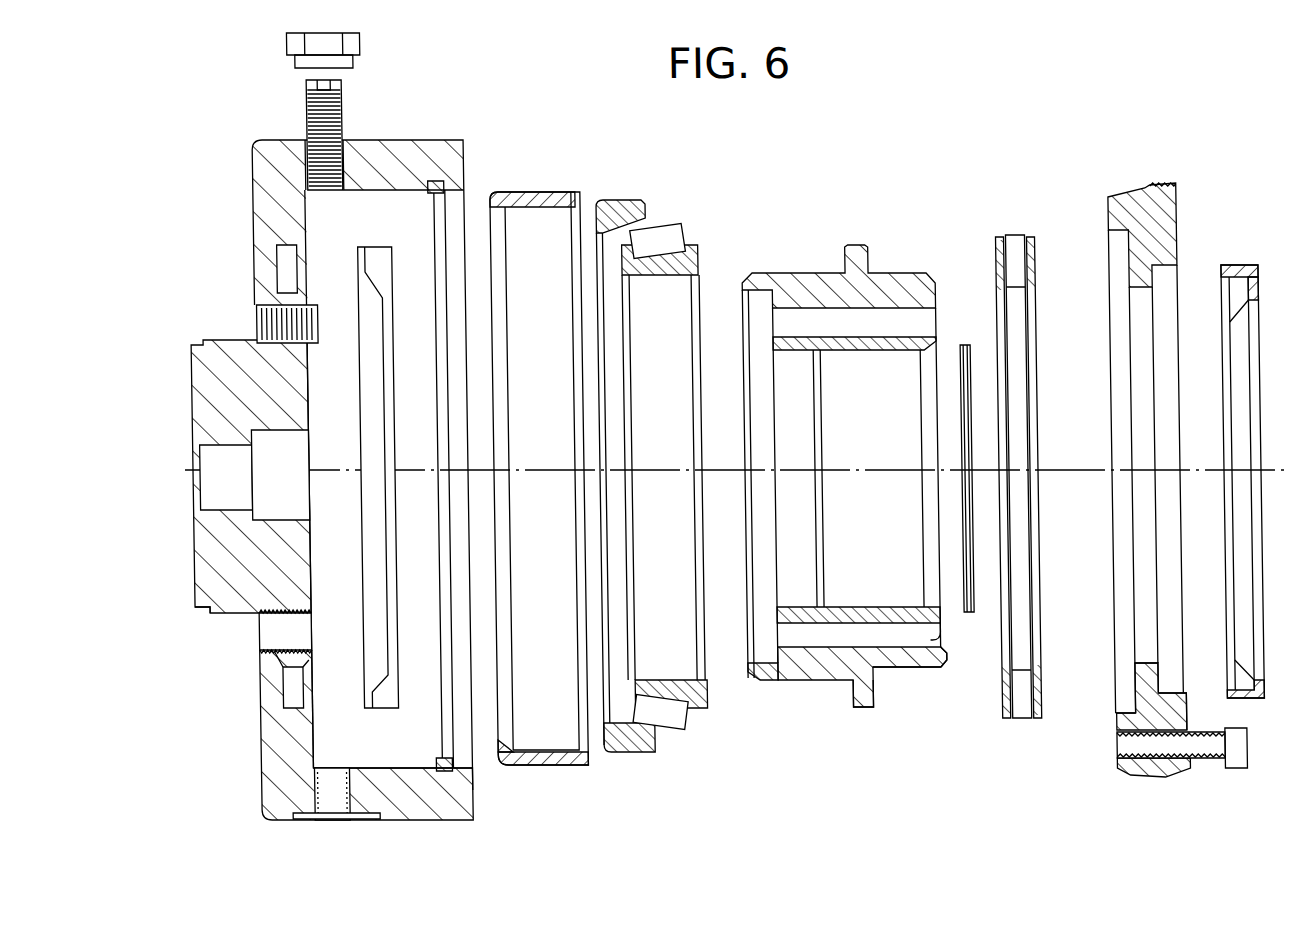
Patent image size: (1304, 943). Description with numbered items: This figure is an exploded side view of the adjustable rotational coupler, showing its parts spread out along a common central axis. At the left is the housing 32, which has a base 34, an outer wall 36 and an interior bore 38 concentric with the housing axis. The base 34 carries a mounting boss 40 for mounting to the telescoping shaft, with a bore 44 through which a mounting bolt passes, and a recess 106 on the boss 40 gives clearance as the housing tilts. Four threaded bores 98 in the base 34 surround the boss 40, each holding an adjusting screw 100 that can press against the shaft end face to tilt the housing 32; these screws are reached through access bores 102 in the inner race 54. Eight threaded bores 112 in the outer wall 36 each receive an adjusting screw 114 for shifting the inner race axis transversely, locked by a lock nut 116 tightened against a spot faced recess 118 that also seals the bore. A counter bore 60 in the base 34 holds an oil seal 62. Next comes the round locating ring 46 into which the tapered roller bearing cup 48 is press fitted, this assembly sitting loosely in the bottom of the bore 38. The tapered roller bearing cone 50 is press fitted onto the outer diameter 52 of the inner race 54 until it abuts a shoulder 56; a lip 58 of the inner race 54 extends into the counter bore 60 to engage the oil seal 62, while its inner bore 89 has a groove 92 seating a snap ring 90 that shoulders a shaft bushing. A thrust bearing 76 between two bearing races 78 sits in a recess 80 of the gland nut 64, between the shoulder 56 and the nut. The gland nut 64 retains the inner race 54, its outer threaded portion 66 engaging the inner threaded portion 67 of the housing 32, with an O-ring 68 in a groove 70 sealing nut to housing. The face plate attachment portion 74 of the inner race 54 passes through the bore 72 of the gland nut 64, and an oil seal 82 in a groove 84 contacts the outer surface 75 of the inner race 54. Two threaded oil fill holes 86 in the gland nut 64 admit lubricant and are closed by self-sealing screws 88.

The housing 32 is at (267, 787).
The base 34 is at (257, 722).
The outer wall 36 is at (422, 797).
The interior bore 38 is at (368, 767).
The mounting boss 40 is at (210, 588).
The bore 44 is at (213, 507).
The locating ring 46 is at (539, 198).
The tapered roller bearing cup 48 is at (619, 202).
The tapered roller bearing cone 50 is at (666, 228).
The outer diameter 52 is at (805, 680).
The inner race 54 is at (796, 285).
The shoulder 56 is at (861, 707).
The lip 58 is at (762, 675).
The counter bore 60 is at (296, 692).
The oil seal 62 is at (372, 600).
The gland nut 64 is at (1144, 192).
The outer threaded portion 66 is at (1163, 185).
The inner threaded portion 67 is at (450, 768).
The O-ring 68 is at (441, 185).
The groove 70 is at (466, 780).
The bore 72 is at (1133, 665).
The face plate attachment portion 74 is at (939, 663).
The outer surface 75 is at (900, 675).
The thrust bearing 76 is at (1018, 250).
The bearing races 78 is at (1001, 245).
The recess 80 is at (1112, 713).
The oil seal 82 is at (1235, 265).
The groove 84 is at (1164, 693).
The oil fill holes 86 is at (1114, 745).
The self-sealing screws 88 is at (1233, 763).
The inner bore 89 is at (893, 607).
The snap ring 90 is at (966, 342).
The groove 92 is at (822, 427).
The threaded bores 98 is at (267, 320).
The adjusting screw 100 is at (283, 288).
The access bores 102 is at (831, 339).
The recess 106 is at (219, 617).
The threaded bores 112 is at (333, 807).
The adjusting screw 114 is at (316, 120).
The lock nut 116 is at (296, 48).
The spot faced recess 118 is at (296, 818).